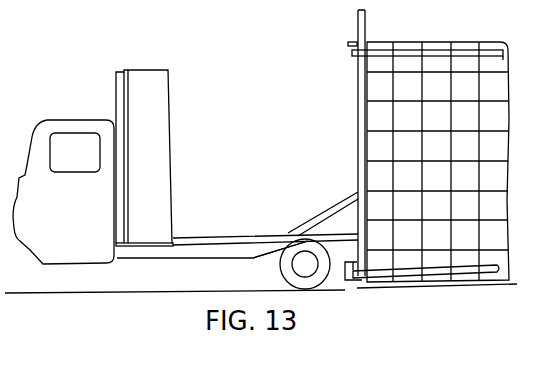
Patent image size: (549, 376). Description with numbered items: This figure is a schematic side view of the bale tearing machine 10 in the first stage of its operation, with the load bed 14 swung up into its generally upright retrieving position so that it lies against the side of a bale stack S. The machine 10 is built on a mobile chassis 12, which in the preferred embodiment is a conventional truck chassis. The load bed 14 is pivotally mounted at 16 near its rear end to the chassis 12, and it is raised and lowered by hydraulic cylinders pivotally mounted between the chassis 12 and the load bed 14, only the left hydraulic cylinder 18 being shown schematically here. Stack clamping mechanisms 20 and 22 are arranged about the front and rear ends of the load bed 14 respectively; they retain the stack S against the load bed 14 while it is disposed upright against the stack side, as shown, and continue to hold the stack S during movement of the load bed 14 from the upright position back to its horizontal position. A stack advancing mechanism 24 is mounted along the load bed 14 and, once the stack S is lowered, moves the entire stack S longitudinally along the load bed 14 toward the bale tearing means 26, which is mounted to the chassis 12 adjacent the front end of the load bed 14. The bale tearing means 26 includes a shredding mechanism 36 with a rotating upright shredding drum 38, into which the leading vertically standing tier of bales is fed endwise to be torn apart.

The machine 10 is at (248, 93).
The mobile chassis 12 is at (205, 250).
The load bed 14 is at (358, 88).
The pivotal mounting 16 is at (357, 212).
The hydraulic cylinder 18 is at (311, 219).
The stack clamping mechanism 20 is at (341, 60).
The stack clamping mechanism 22 is at (345, 293).
The stack advancing mechanism 24 is at (380, 290).
The bale tearing means 26 is at (101, 86).
The shredding mechanism 36 is at (183, 140).
The shredding drum 38 is at (149, 232).
The bale stack S is at (462, 40).